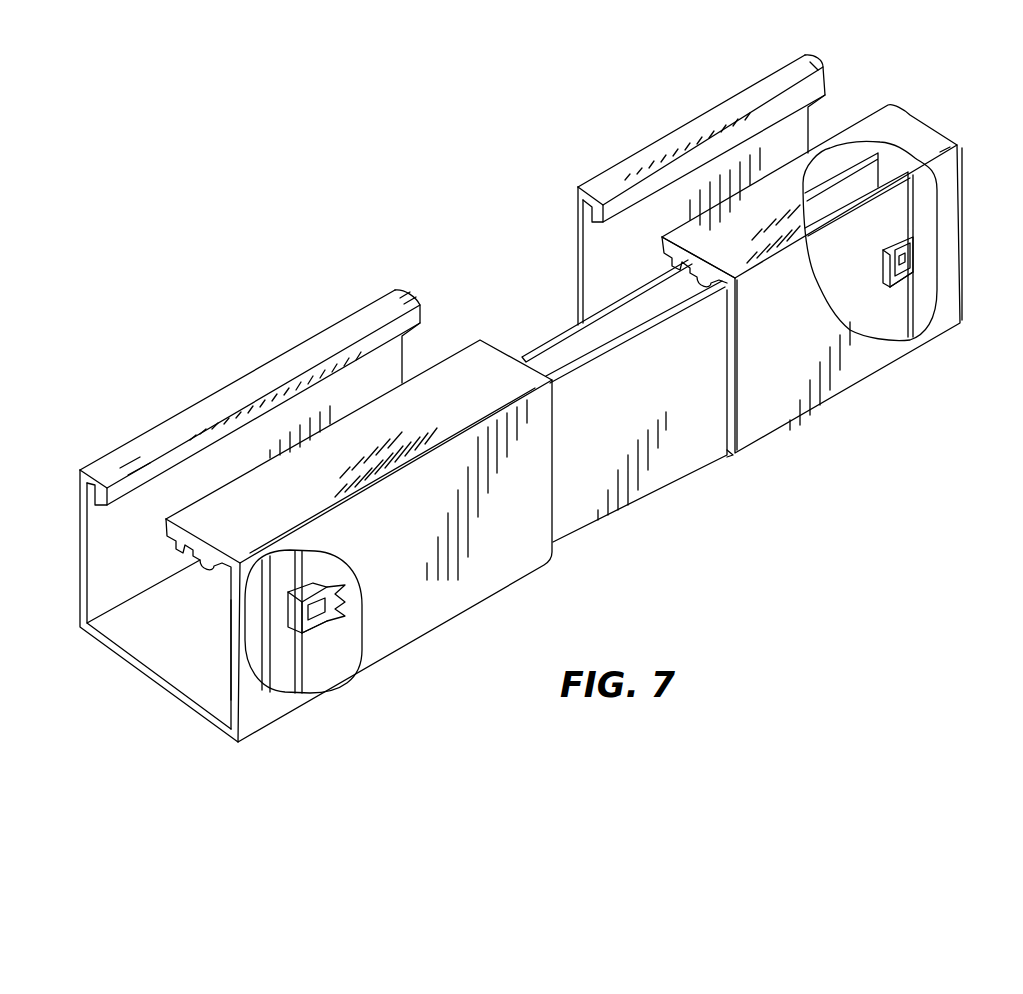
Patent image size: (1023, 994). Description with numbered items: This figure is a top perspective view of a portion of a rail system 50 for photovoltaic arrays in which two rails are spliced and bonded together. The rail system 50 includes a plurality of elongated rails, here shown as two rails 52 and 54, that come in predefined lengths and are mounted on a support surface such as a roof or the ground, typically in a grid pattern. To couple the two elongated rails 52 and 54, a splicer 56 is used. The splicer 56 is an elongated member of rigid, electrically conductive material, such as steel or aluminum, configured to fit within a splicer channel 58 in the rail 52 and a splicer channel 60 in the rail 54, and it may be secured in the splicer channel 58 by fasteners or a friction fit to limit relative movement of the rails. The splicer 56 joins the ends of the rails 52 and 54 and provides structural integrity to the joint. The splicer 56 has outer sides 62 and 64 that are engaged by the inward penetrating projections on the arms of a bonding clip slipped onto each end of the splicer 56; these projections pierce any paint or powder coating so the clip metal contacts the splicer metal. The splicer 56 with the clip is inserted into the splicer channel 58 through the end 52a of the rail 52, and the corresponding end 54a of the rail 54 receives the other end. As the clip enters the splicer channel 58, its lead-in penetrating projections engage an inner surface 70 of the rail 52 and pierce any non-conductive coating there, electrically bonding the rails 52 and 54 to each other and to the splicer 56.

The rail system 50 is at (185, 283).
The elongated rail 52 is at (263, 362).
The end of the rail 52a is at (403, 288).
The elongated rail 54 is at (707, 106).
The second rail end 54a is at (575, 190).
The splicer 56 is at (652, 496).
The splicer channel 58 is at (200, 615).
The splicer channel 60 is at (920, 198).
The side of the splicer 62 is at (648, 420).
The side of the splicer 64 is at (530, 350).
The inner surface of the rail 70 is at (228, 640).